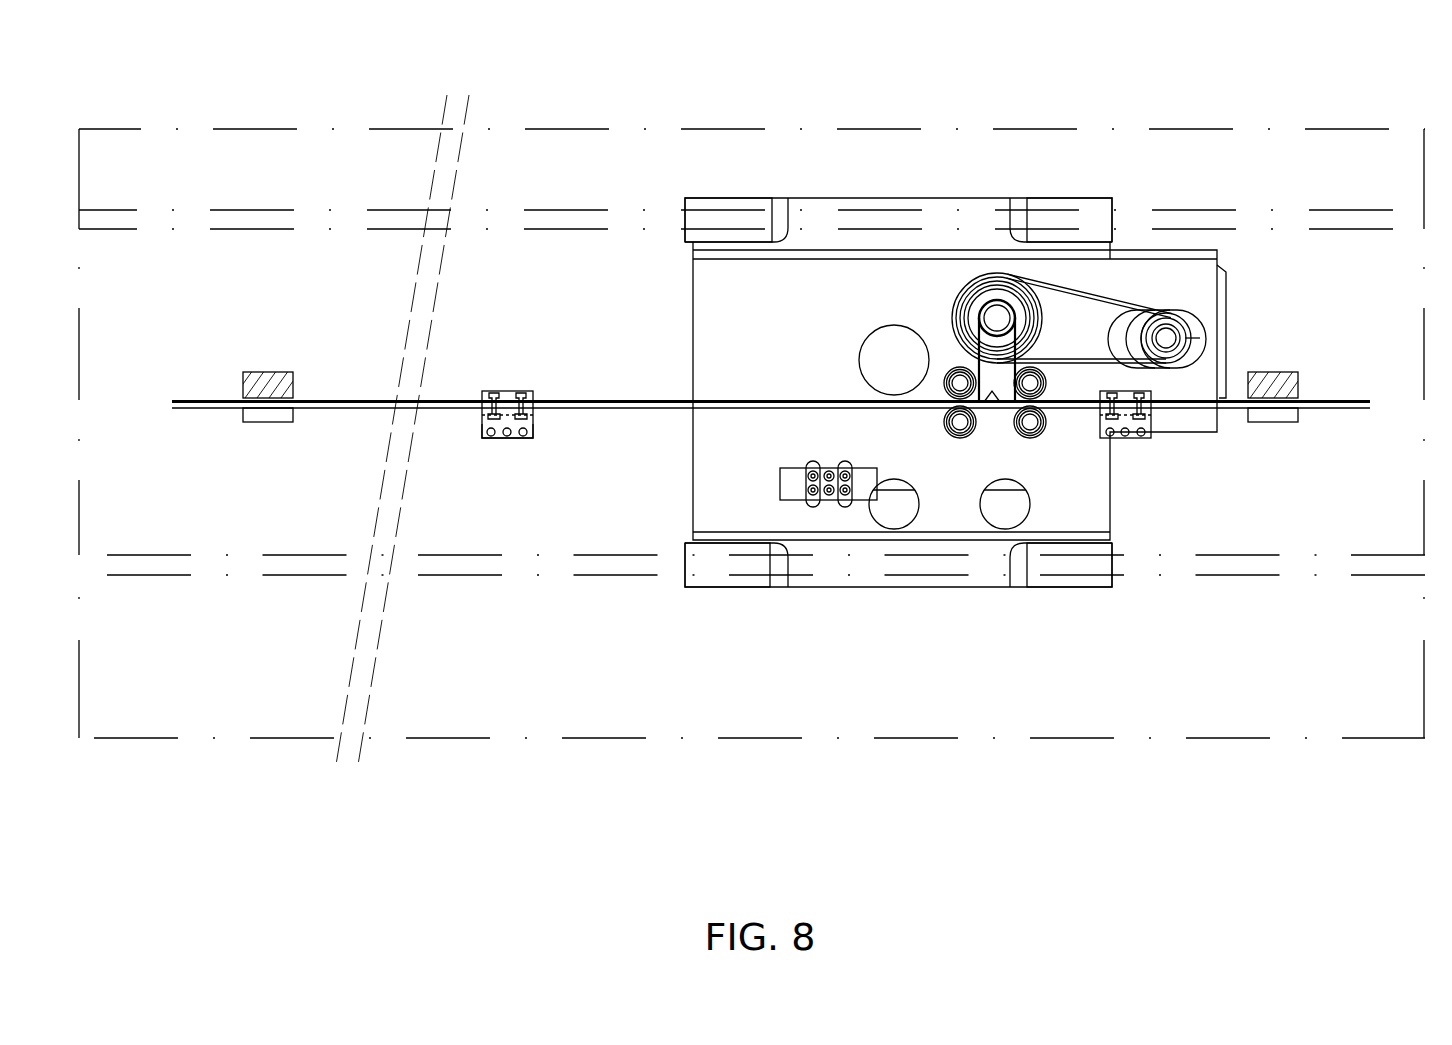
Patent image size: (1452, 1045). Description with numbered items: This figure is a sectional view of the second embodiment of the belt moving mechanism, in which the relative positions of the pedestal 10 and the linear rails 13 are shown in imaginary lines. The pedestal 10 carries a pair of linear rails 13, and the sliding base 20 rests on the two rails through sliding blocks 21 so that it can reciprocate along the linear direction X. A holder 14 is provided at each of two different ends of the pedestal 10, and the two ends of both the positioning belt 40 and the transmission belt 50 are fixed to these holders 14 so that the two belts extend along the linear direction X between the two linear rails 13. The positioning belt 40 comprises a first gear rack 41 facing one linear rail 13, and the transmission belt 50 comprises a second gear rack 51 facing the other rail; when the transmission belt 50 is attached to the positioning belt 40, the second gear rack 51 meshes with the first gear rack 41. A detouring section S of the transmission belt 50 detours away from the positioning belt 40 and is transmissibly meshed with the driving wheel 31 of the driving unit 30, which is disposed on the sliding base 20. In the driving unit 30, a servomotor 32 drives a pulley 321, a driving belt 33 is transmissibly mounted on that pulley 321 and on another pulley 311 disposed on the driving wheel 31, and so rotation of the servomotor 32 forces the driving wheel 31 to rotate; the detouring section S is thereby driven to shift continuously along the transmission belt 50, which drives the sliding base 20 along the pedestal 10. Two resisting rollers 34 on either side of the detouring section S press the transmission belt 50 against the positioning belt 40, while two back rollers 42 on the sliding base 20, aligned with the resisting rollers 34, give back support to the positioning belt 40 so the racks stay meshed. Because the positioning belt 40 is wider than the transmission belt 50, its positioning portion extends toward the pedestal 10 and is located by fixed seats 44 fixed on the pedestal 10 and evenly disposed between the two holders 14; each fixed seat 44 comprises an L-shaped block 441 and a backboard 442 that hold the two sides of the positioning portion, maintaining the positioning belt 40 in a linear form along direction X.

The pedestal 10 is at (373, 130).
The linear rail 13 is at (235, 215).
The holder 14 is at (277, 384).
The sliding base 20 is at (810, 198).
The sliding block 21 is at (1092, 198).
The driving unit 30 is at (1203, 338).
The driving wheel 31 is at (995, 305).
The pulley 311 is at (1018, 275).
The servomotor 32 is at (1195, 313).
The pulley 321 is at (1167, 322).
The driving belt 33 is at (1118, 313).
The resisting roller 34 is at (952, 372).
The positioning belt 40 is at (612, 410).
The first gear rack 41 is at (988, 398).
The back roller 42 is at (958, 428).
The fixed seat 44 is at (488, 392).
The L-shaped block 441 is at (511, 438).
The backboard 442 is at (512, 393).
The transmission belt 50 is at (632, 398).
The second gear rack 51 is at (1030, 420).
The detouring section S is at (963, 333).